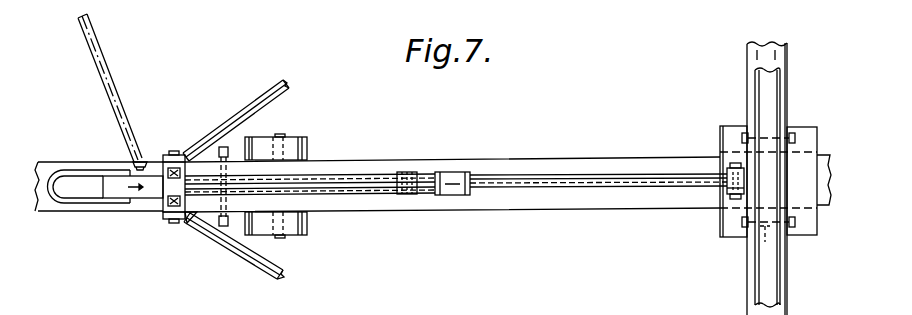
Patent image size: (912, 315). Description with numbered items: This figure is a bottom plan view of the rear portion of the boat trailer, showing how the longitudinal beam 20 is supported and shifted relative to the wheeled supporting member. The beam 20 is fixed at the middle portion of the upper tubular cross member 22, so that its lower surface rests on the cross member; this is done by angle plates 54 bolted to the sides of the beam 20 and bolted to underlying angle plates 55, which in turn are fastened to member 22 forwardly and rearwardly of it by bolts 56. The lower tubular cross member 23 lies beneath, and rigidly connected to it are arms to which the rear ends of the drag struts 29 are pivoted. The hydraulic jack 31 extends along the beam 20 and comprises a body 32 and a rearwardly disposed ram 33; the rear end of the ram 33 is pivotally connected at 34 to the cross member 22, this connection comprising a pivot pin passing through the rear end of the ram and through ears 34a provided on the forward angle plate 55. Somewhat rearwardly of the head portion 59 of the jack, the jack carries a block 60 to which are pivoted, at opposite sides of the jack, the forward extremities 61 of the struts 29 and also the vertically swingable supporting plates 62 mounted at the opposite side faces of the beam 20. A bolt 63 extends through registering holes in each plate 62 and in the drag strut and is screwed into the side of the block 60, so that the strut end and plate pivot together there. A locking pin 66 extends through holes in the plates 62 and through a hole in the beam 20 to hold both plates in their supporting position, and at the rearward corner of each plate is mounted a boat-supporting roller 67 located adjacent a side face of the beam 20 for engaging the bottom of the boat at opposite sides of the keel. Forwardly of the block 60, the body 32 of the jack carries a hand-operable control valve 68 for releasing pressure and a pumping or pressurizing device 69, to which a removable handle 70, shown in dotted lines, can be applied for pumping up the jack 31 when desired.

The longitudinal beam 20 is at (445, 152).
The upper tubular cross member 22 is at (752, 60).
The lower tubular cross member 23 is at (760, 91).
The drag struts 29 is at (292, 87).
The hydraulic jack 31 is at (346, 171).
The body of the hydraulic jack 32 is at (360, 188).
The ram 33 is at (553, 177).
The pivotal connection 34 is at (733, 167).
The ears 34a is at (727, 196).
The angle plates 54 is at (801, 126).
The underlying angle plates 55 is at (812, 127).
The bolts 56 is at (763, 242).
The head portion of the jack 59 is at (78, 193).
The block 60 is at (167, 190).
The forward extremities of the struts 61 is at (189, 225).
The supporting plates 62 is at (233, 135).
The bolt 63 is at (173, 154).
The locking pin 66 is at (222, 147).
The boat-supporting roller 67 is at (303, 137).
The hand-operable control valve 68 is at (138, 192).
The pumping device 69 is at (142, 158).
The removable handle 70 is at (113, 82).